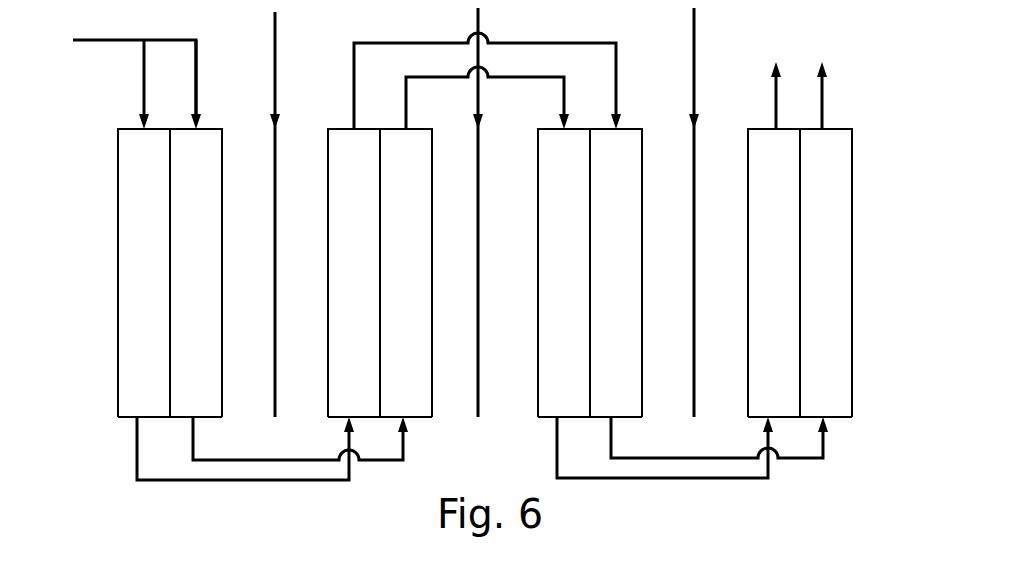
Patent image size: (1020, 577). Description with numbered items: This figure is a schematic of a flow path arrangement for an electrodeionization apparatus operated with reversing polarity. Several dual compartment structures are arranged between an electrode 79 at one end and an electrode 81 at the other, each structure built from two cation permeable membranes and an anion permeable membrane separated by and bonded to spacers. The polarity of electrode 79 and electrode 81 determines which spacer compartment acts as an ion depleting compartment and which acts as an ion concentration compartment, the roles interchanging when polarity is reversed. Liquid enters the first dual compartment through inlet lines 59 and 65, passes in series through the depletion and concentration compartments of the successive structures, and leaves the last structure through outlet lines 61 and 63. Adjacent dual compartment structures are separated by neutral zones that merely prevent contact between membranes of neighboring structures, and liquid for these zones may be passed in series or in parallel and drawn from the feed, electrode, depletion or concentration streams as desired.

The feed line to anode compartment 59 is at (145, 89).
The anolyte outlet line 61 is at (771, 74).
The catholyte outlet line 63 is at (825, 74).
The feed line to cathode compartment 65 is at (197, 72).
The electrode 79 is at (105, 267).
The electrode 81 is at (904, 275).